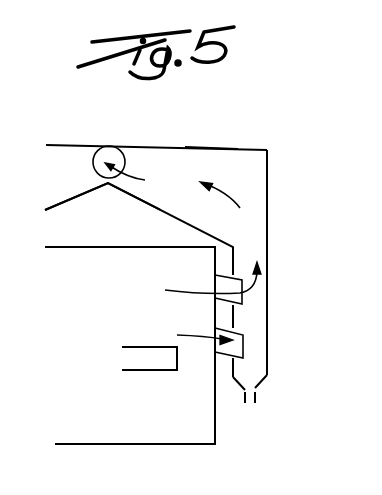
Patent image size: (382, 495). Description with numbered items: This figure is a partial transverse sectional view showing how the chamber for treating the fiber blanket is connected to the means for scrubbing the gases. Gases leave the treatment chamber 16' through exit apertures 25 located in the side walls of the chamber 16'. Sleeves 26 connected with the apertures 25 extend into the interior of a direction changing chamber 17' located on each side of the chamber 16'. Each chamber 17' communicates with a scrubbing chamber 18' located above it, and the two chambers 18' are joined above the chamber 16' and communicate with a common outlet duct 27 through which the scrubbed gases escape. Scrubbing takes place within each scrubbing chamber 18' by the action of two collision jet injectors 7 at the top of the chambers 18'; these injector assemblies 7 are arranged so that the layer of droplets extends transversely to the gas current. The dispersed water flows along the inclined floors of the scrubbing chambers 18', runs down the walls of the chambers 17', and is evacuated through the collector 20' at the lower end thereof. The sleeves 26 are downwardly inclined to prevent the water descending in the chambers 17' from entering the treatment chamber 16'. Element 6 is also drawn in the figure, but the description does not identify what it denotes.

The common outlet duct 27 is at (113, 157).
The collision jet injector 7 is at (190, 148).
The scrubbing chamber 18' is at (201, 187).
The treatment chamber 16' is at (102, 215).
The exit aperture 25 is at (213, 282).
The direction changing chamber 17' is at (249, 262).
The sleeve 26 is at (245, 330).
The duct 6 is at (152, 347).
The collector 20' is at (275, 396).